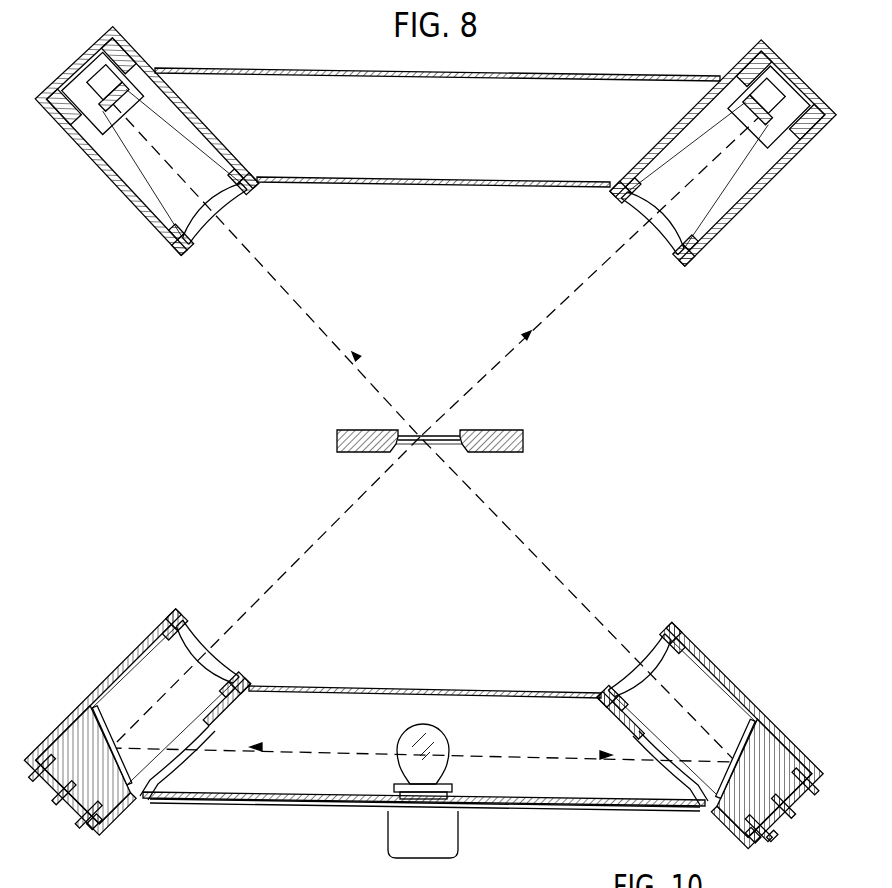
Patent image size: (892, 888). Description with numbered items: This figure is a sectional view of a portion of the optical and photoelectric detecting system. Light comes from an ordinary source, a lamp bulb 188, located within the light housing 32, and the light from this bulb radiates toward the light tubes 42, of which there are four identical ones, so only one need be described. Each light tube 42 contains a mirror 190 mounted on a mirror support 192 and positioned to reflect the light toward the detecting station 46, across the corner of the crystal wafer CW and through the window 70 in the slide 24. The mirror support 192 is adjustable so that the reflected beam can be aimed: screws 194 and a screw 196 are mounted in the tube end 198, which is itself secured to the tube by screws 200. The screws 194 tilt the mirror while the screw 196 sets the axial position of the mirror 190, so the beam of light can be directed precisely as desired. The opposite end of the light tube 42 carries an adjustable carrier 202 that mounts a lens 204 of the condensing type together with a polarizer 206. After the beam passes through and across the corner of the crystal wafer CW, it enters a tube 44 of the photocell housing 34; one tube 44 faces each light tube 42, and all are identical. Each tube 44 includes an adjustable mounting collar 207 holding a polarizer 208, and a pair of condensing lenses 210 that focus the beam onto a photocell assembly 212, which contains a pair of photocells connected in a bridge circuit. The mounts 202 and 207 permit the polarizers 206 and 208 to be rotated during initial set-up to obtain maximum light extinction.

The tube 44 is at (435, 154).
The photocell assembly 212 is at (118, 100).
The condensing lenses 210 is at (238, 172).
The adjustable mounting collar 207 is at (248, 188).
The polarizer 208 is at (210, 234).
The photocell housing 34 is at (397, 190).
The detecting station 46 is at (432, 410).
The crystal wafer CW is at (448, 431).
The slide 24 is at (447, 440).
The window 70 is at (404, 441).
The tube 42 is at (84, 690).
The light housing 32 is at (381, 683).
The lamp bulb 188 is at (440, 742).
The polarizer 206 is at (657, 642).
The adjustable carrier 202 is at (674, 640).
The lens 204 is at (638, 672).
The mirror 190 is at (733, 738).
The mirror support 192 is at (768, 742).
The screws 194 is at (810, 777).
The screw 196 is at (781, 803).
The tube end 198 is at (753, 858).
The screws 200 is at (735, 846).